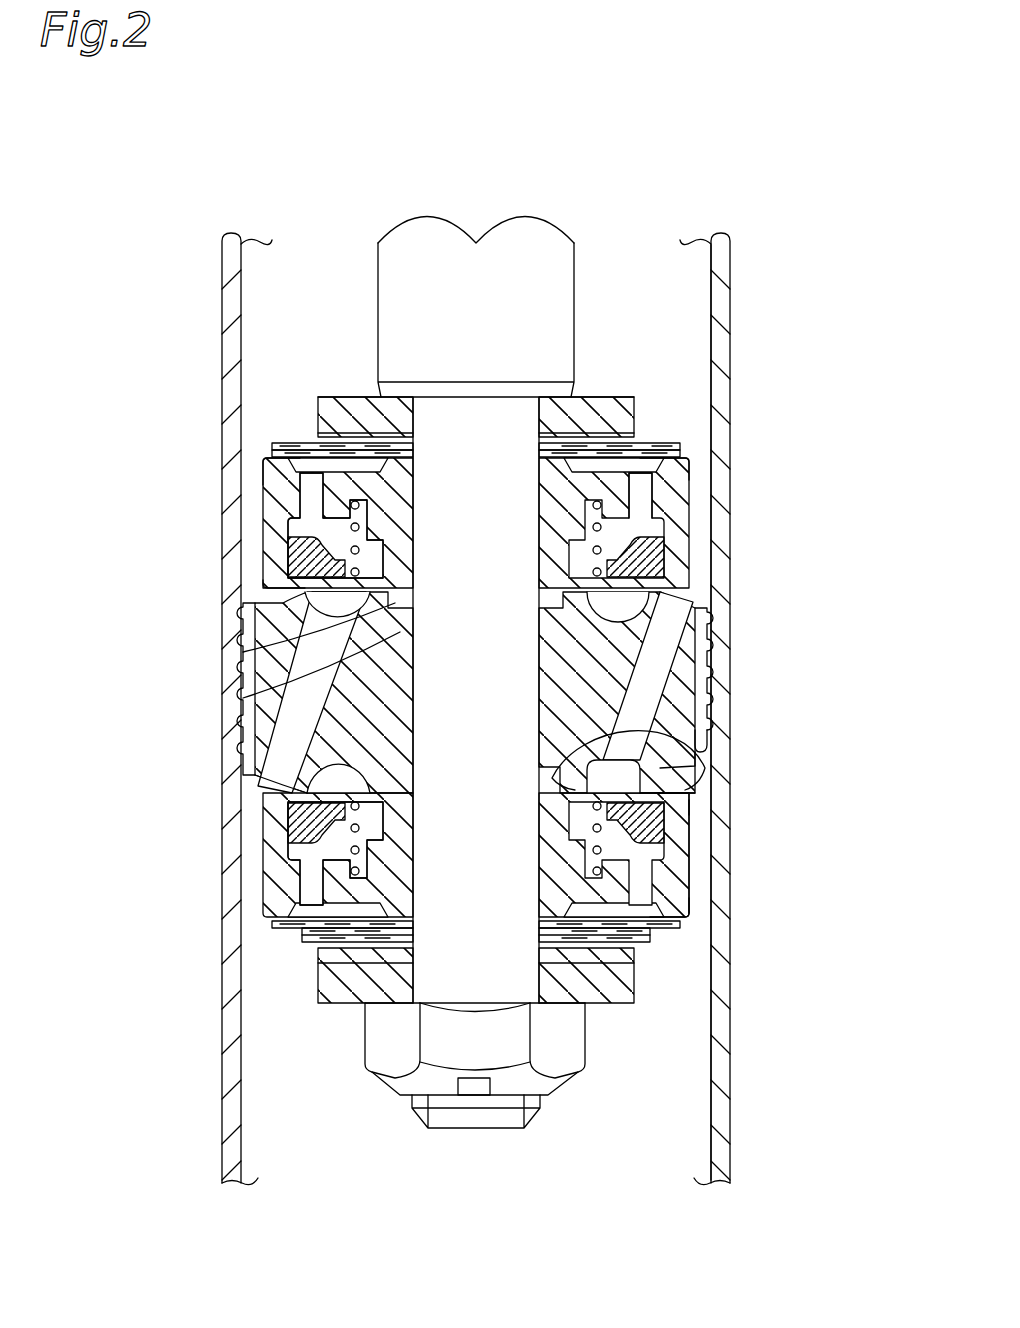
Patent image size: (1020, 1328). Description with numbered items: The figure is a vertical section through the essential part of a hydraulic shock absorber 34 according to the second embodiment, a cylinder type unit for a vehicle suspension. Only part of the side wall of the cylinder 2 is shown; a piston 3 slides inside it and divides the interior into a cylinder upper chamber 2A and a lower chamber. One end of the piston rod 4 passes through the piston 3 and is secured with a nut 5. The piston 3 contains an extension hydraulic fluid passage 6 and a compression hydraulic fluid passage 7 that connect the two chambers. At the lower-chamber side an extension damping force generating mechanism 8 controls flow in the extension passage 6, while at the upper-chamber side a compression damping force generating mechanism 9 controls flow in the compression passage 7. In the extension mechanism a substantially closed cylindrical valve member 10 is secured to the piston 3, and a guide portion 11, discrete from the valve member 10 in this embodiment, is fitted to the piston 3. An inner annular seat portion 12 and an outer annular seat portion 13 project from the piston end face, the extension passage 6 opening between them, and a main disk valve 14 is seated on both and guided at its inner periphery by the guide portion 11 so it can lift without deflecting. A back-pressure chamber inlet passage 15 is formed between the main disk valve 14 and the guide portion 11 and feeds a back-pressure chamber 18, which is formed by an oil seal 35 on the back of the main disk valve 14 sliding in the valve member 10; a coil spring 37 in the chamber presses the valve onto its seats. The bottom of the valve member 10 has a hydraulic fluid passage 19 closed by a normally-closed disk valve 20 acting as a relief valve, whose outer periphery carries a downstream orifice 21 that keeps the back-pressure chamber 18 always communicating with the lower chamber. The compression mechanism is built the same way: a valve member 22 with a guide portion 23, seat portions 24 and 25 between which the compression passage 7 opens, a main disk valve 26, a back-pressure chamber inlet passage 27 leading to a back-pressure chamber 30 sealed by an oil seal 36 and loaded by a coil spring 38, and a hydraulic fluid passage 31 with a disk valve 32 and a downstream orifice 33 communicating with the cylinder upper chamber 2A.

The cylinder 2 is at (731, 257).
The cylinder upper chamber 2A is at (700, 312).
The piston 3 is at (485, 708).
The piston rod 4 is at (430, 243).
The nut 5 is at (400, 1085).
The extension hydraulic fluid passage 6 is at (712, 625).
The compression hydraulic fluid passage 7 is at (272, 762).
The extension damping force generating mechanism 8 is at (697, 887).
The compression damping force generating mechanism 9 is at (255, 503).
The valve member 10 is at (305, 848).
The guide portion 11 is at (295, 815).
The annular seat portion 12 is at (645, 768).
The annular seat portion 13 is at (662, 788).
The main disk valve 14 is at (693, 795).
The back-pressure chamber inlet passage 15 is at (698, 738).
The back-pressure chamber 18 is at (638, 847).
The hydraulic fluid passage 19 is at (300, 893).
The disk valve 20 is at (285, 943).
The downstream orifice 21 is at (300, 928).
The valve member 22 is at (680, 527).
The guide portion 23 is at (345, 447).
The seat portion 24 is at (345, 630).
The seat portion 25 is at (330, 613).
The main disk valve 26 is at (270, 592).
The back-pressure chamber inlet passage 27 is at (375, 655).
The back-pressure chamber 30 is at (332, 542).
The hydraulic fluid passage 31 is at (637, 487).
The disk valve 32 is at (675, 450).
The downstream orifice 33 is at (683, 460).
The hydraulic shock absorber 34 is at (652, 190).
The oil seal 35 is at (655, 815).
The oil seal 36 is at (285, 562).
The coil spring 37 is at (680, 913).
The coil spring 38 is at (268, 468).